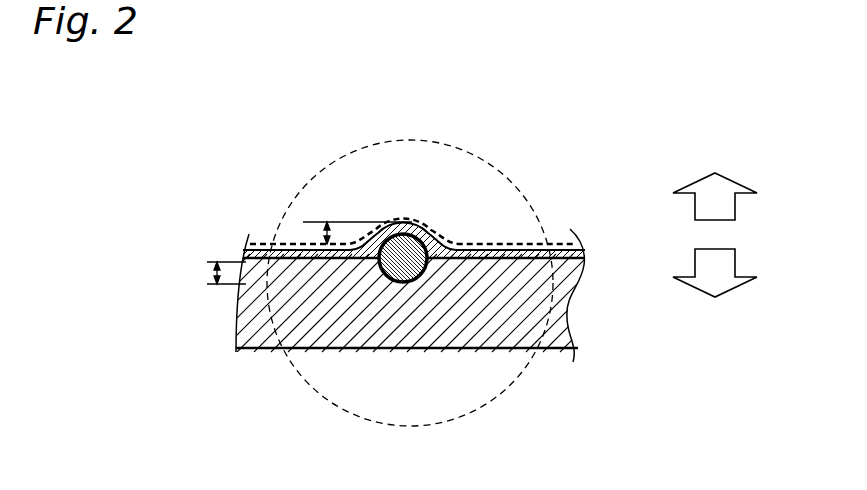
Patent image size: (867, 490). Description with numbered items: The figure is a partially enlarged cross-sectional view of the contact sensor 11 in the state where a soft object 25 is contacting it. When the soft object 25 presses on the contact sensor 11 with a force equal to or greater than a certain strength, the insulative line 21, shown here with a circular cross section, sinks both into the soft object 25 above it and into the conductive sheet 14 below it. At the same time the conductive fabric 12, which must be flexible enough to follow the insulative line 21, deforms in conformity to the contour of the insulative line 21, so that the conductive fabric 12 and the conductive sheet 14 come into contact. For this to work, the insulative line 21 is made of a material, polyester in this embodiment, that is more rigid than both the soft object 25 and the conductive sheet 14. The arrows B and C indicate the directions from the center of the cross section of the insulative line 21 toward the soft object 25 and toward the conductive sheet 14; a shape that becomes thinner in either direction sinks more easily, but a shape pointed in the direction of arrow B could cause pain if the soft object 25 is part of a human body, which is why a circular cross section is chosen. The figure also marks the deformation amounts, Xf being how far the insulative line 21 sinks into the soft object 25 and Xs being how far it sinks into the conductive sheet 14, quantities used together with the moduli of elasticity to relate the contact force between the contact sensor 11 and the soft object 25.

The contact sensor 11 is at (140, 135).
The conductive fabric 12 is at (585, 256).
The conductive sheet 14 is at (564, 351).
The insulative line 21 is at (405, 265).
The soft object 25 is at (515, 246).
The amount of deformation into soft object Xf is at (324, 233).
The amount of deformation into conductive sheet Xs is at (210, 275).
The arrow B is at (737, 196).
The arrow C is at (735, 273).